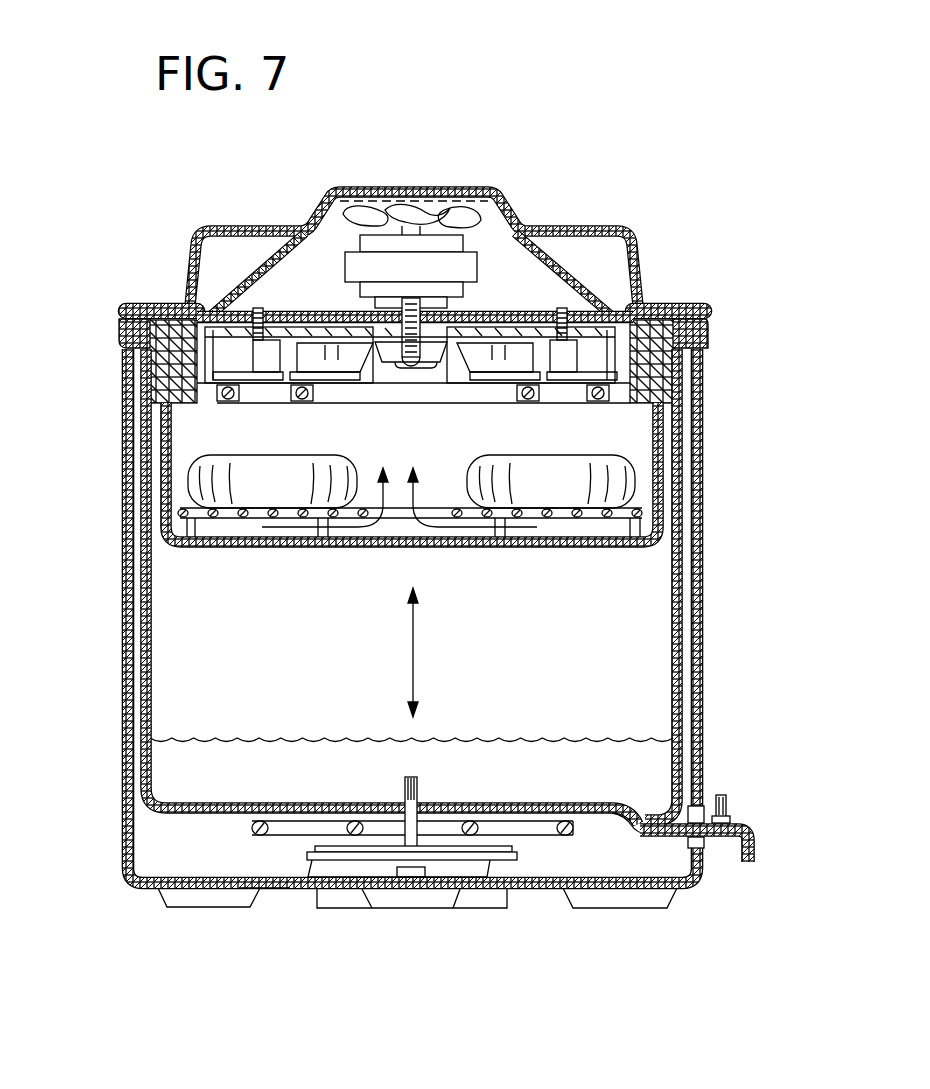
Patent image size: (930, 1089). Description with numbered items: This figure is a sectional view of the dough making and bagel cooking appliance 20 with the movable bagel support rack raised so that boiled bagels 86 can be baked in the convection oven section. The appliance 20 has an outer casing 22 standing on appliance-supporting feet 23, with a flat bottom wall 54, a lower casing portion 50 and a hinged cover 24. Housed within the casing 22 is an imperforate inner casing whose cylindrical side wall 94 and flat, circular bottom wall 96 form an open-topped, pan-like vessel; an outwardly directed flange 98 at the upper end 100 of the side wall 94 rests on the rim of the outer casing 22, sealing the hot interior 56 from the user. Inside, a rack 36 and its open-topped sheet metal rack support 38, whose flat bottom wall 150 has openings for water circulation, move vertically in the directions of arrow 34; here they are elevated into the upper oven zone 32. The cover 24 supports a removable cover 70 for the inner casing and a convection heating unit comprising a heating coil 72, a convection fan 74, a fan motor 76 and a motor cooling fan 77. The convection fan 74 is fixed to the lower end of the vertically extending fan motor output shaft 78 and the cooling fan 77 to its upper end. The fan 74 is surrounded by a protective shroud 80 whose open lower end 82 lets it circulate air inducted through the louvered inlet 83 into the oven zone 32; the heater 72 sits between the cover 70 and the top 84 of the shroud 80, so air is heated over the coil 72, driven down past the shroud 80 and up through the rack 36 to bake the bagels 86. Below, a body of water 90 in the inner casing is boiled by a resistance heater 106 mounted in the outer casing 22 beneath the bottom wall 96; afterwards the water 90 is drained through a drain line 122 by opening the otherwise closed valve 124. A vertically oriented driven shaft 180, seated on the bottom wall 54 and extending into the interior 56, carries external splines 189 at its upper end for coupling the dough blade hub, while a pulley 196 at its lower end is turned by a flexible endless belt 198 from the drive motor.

The dough making and bagel cooking appliance 20 is at (142, 188).
The casing 22 is at (108, 621).
The appliance-supporting feet 23 is at (200, 903).
The hinged cover 24 is at (585, 216).
The upper zone 32 is at (150, 457).
The arrow 34 is at (405, 650).
The rack 36 is at (441, 510).
The rack support 38 is at (705, 578).
The housing base 50 is at (122, 752).
The bottom wall 54 is at (260, 889).
The interior 56 is at (656, 636).
The removable cover 70 is at (140, 302).
The heating coil 72 is at (312, 404).
The convection fan 74 is at (570, 362).
The fan motor 76 is at (480, 263).
The motor cooling fan 77 is at (432, 218).
The fan motor output shaft 78 is at (400, 312).
The protective shroud 80 is at (615, 346).
The open lower end 82 is at (550, 402).
The louvered inlet 83 is at (640, 273).
The top of fan shroud 84 is at (565, 320).
The bagels 86 is at (640, 473).
The body of boiling water 90 is at (290, 755).
The cylindrical side wall 94 is at (702, 525).
The bottom wall 96 is at (583, 813).
The flange 98 is at (118, 335).
The upper end 100 is at (118, 309).
The resistance heater 106 is at (253, 824).
The drain line 122 is at (748, 840).
The valve 124 is at (727, 805).
The flat bottom wall 150 is at (445, 547).
The driven shaft 180 is at (408, 826).
The external splines 189 is at (418, 790).
The pulley 196 is at (300, 890).
The flexible endless belt 198 is at (458, 862).